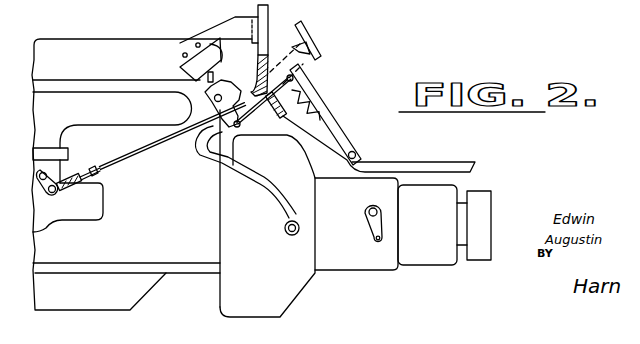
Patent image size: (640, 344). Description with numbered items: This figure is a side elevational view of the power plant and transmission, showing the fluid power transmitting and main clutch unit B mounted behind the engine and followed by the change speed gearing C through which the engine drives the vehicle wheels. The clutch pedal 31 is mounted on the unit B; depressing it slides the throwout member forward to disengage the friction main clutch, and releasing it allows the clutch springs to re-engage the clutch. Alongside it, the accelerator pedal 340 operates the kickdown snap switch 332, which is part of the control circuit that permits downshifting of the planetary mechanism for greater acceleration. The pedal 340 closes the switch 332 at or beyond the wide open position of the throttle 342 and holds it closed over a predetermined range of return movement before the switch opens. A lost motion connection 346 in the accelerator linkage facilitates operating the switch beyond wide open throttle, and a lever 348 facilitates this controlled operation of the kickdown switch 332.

The clutch pedal 31 is at (322, 42).
The snap switch 332 is at (182, 63).
The accelerator pedal 340 is at (350, 133).
The throttle 342 is at (60, 208).
The lost motion connection 346 is at (100, 170).
The lever 348 is at (200, 95).
The fluid power transmitting and main clutch unit B is at (285, 285).
The change speed gearing C is at (392, 260).